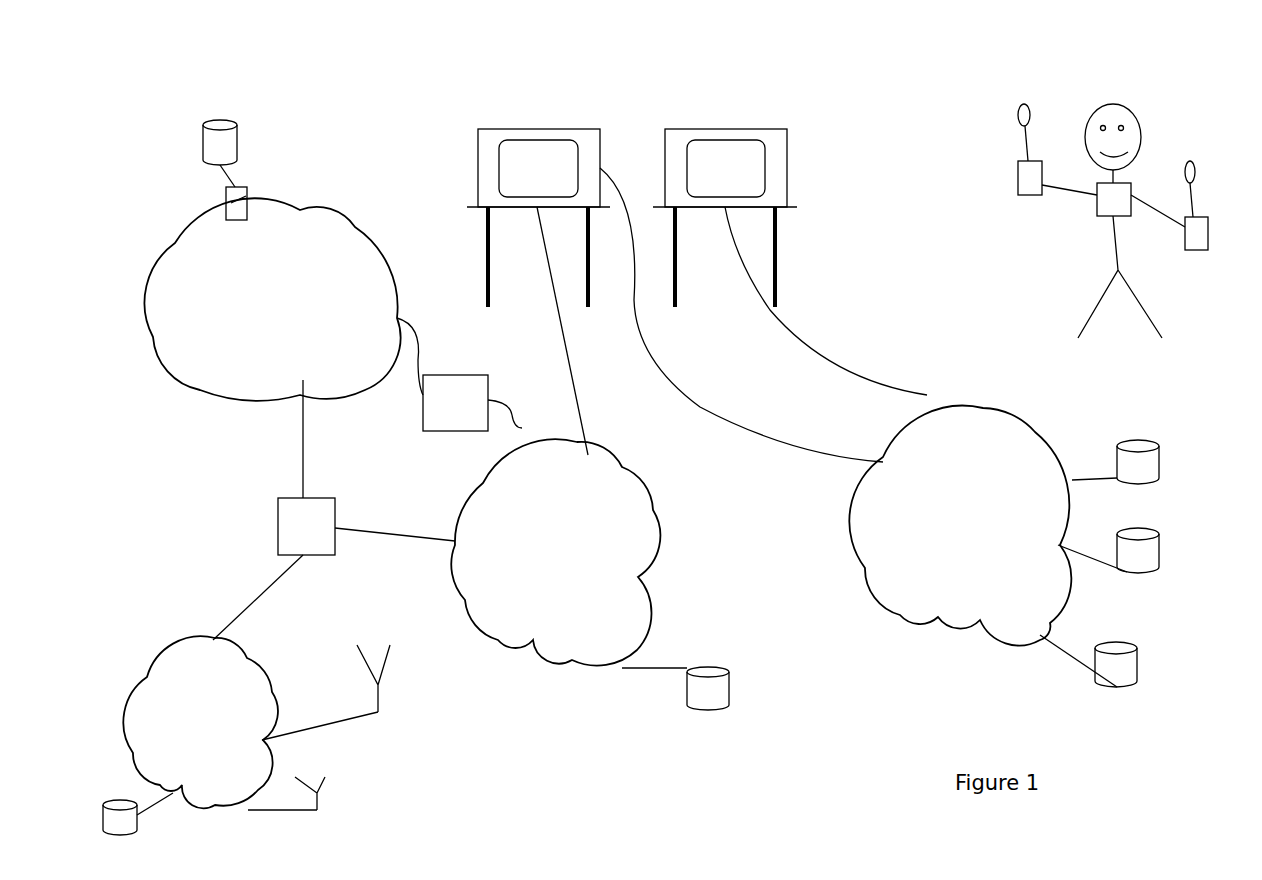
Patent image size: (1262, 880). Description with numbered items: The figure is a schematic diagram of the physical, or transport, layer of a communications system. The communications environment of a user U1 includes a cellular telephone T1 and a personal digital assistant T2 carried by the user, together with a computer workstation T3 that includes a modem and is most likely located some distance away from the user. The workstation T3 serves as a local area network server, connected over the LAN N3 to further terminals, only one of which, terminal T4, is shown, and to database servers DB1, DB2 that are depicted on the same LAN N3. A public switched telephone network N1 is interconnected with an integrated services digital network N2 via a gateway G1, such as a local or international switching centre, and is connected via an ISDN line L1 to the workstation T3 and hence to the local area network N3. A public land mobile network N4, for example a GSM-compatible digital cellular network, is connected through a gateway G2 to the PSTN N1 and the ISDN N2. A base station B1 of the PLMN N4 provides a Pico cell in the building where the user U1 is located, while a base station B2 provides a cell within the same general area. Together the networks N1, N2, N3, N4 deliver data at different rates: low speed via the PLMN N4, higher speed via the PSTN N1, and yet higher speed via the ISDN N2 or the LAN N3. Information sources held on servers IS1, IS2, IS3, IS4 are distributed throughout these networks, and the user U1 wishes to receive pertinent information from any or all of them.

The public switched telephone network N1 is at (213, 393).
The integrated services digital network N2 is at (653, 510).
The local area network N3 is at (920, 620).
The public land mobile network N4 is at (148, 660).
The gateway G1 is at (459, 374).
The gateway G2 is at (334, 510).
The server IS1 is at (120, 835).
The server IS2 is at (218, 118).
The server IS3 is at (1138, 440).
The server IS4 is at (708, 710).
The database server DB1 is at (1163, 552).
The database server DB2 is at (1138, 664).
The cellular telephone T1 is at (1025, 140).
The personal digital assistant T2 is at (1188, 160).
The computer workstation T3 is at (478, 170).
The terminal T4 is at (725, 128).
The user U1 is at (1133, 105).
The ISDN line L1 is at (741, 315).
The base station B1 is at (302, 800).
The base station B2 is at (326, 692).